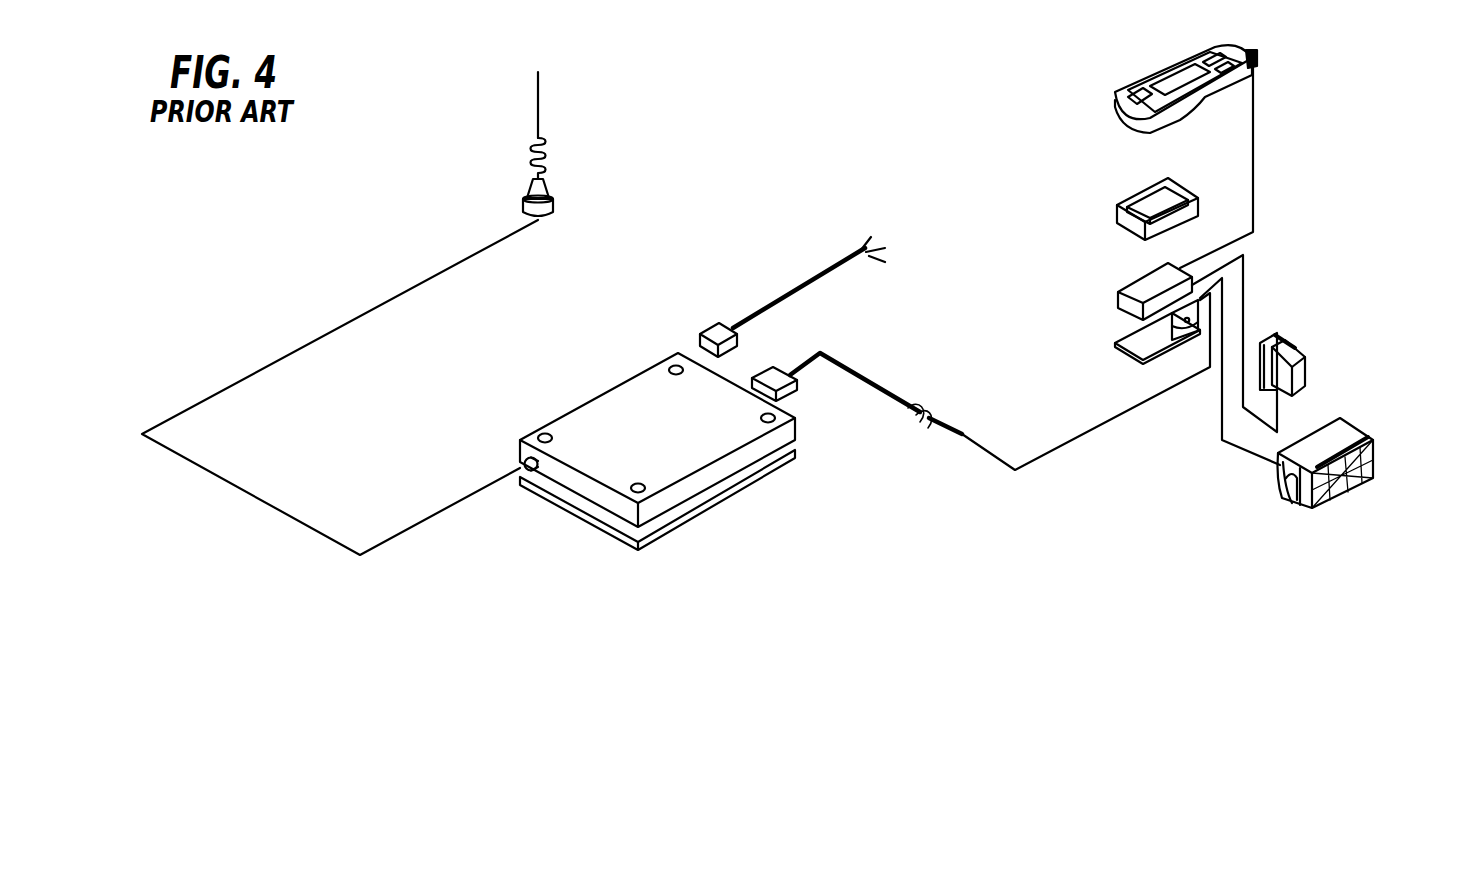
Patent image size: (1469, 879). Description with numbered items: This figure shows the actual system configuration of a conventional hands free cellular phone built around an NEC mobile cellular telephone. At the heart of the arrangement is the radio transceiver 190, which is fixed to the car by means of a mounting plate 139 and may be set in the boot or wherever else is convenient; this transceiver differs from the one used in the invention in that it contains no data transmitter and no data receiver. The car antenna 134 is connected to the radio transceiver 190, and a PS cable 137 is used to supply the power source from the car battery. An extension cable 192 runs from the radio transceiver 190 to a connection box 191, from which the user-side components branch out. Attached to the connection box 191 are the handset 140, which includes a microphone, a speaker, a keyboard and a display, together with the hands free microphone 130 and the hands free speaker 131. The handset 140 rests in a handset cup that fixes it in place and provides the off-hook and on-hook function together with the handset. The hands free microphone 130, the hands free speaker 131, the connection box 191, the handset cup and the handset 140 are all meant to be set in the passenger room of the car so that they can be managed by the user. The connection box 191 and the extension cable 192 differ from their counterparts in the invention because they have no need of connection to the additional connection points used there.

The antenna 134 is at (594, 141).
The radio transceiver 190 is at (600, 431).
The mounting plate 139 is at (657, 538).
The PS cable 137 is at (792, 287).
The extension cable 192 is at (981, 410).
The handset 140 is at (1091, 156).
The connection box 191 is at (1107, 321).
The hands free microphone 130 is at (1332, 339).
The hands free speaker 131 is at (1363, 487).